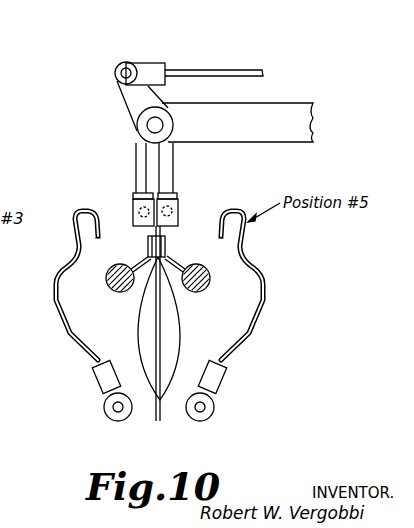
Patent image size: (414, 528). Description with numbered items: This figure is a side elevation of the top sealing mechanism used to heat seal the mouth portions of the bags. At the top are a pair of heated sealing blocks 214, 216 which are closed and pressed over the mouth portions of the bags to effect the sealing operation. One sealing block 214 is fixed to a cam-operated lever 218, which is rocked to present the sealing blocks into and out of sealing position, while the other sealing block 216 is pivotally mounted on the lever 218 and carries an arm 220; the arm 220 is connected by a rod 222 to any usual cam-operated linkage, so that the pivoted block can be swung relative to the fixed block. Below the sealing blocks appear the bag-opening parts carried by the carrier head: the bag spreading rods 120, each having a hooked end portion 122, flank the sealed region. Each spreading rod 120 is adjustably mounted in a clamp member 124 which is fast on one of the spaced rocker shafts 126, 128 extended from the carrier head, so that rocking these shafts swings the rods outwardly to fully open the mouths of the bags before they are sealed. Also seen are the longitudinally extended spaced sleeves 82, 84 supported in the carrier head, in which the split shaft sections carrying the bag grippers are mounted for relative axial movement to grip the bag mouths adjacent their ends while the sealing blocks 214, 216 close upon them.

The arm 220 is at (128, 100).
The rod 222 is at (227, 72).
The cam-operated lever 218 is at (272, 137).
The heated sealing block 216 is at (133, 208).
The heated sealing block 214 is at (178, 207).
The hooked end portions 122 is at (115, 229).
The sleeve 84 is at (125, 293).
The sleeve 82 is at (192, 290).
The bag spreading rod 120 is at (65, 335).
The clamp member 124 is at (102, 397).
The rocker shaft 128 is at (115, 415).
The rocker shaft 126 is at (203, 408).